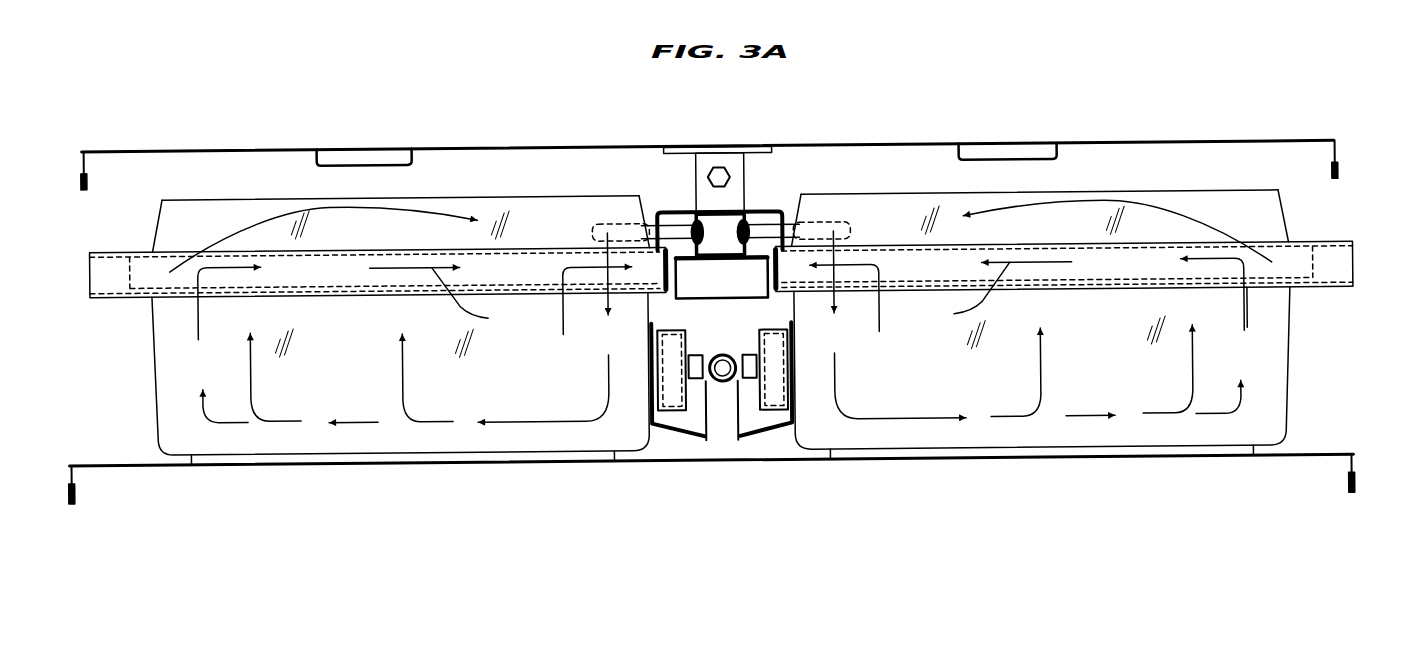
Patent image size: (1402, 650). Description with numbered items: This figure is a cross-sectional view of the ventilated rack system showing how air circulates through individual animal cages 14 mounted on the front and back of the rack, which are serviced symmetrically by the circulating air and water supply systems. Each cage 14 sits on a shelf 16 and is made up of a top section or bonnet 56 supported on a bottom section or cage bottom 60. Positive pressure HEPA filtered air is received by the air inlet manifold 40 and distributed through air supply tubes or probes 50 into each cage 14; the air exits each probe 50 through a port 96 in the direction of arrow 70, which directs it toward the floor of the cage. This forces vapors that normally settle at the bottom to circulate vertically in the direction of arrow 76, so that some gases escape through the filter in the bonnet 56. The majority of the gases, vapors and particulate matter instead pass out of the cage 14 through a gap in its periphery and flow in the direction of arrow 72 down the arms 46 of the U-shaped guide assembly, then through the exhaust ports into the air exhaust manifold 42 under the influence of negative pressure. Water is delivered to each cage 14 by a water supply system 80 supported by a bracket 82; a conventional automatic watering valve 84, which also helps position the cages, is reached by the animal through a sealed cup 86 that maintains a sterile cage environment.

The animal cage 14 is at (85, 357).
The shelf 16 is at (1186, 146).
The air inlet manifold 40 is at (712, 216).
The air exhaust manifold 42 is at (755, 259).
The arm 46 is at (117, 247).
The air supply tube 50 is at (650, 247).
The bonnet 56 is at (158, 203).
The cage bottom 60 is at (156, 380).
The arrow 70 is at (355, 419).
The arrow 72 is at (228, 229).
The arrow 76 is at (215, 418).
The water supply system 80 is at (721, 452).
The bracket 82 is at (673, 430).
The automatic watering valve 84 is at (658, 333).
The sealed cup 86 is at (757, 342).
The port 96 is at (583, 242).